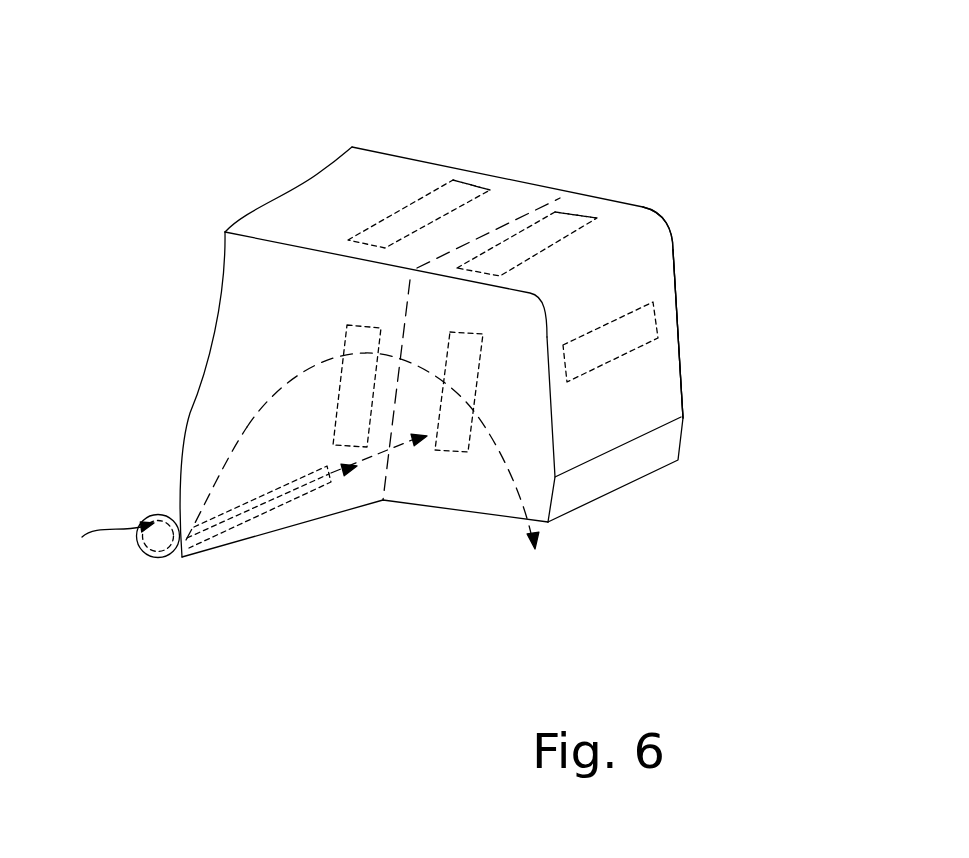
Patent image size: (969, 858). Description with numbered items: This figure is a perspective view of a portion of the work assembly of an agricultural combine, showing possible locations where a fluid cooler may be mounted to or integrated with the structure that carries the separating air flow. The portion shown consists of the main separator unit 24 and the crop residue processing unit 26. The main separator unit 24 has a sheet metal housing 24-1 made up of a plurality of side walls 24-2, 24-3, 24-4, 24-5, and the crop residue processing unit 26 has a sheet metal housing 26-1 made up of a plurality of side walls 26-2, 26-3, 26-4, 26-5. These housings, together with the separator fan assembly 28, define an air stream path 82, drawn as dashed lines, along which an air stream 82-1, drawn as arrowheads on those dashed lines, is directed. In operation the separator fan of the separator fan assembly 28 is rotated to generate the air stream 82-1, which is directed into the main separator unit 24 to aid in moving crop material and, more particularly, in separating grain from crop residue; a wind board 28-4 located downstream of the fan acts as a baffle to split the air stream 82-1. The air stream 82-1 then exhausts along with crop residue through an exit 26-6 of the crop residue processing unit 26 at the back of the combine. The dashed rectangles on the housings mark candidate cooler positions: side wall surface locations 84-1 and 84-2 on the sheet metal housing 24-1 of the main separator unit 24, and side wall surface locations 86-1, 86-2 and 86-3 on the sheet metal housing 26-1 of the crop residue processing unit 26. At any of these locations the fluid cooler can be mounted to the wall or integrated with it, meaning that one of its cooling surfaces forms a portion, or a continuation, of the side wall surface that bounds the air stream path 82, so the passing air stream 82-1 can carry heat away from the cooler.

The main separator unit 24 is at (428, 158).
The sheet metal housing 24-1 is at (340, 189).
The side wall 24-2 is at (481, 184).
The side wall 24-3 is at (272, 272).
The side wall 24-4 is at (300, 522).
The side wall 24-5 is at (564, 213).
The crop residue processing unit 26 is at (748, 199).
The sheet metal housing 26-1 is at (570, 206).
The side wall 26-2 is at (596, 219).
The side wall 26-3 is at (523, 413).
The side wall 26-4 is at (607, 283).
The side wall 26-5 is at (680, 319).
The exit 26-6 is at (608, 495).
The separator fan assembly 28 is at (153, 512).
The wind board 28-4 is at (267, 497).
The air stream path 82 is at (261, 412).
The air stream 82-1 is at (212, 486).
The side wall surface location 84-1 is at (500, 178).
The side wall surface location 84-2 is at (347, 337).
The side wall surface location 86-1 is at (588, 228).
The side wall surface location 86-2 is at (457, 453).
The side wall surface location 86-3 is at (623, 357).